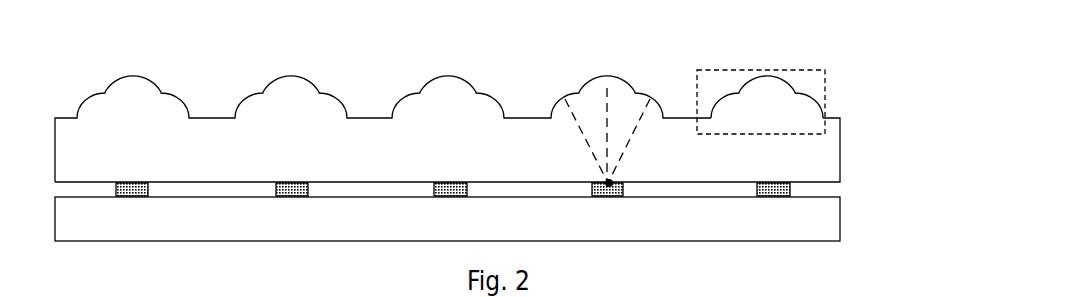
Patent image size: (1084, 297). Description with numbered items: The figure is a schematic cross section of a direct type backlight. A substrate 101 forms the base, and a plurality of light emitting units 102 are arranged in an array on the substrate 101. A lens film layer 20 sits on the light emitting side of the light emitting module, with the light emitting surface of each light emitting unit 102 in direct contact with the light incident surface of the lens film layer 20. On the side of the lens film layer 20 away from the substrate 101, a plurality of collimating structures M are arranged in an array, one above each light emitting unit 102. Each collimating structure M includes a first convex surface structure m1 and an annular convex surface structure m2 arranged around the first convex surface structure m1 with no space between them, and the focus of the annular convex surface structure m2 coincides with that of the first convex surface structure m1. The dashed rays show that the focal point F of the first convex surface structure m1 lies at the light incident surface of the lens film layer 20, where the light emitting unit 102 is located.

The lens film layer 20 is at (842, 133).
The collimating structure M is at (800, 80).
The first convex surface structure m1 is at (767, 77).
The annular convex surface structure m2 is at (810, 100).
The focal point F is at (615, 182).
The light emitting unit 102 is at (792, 190).
The substrate 101 is at (841, 221).